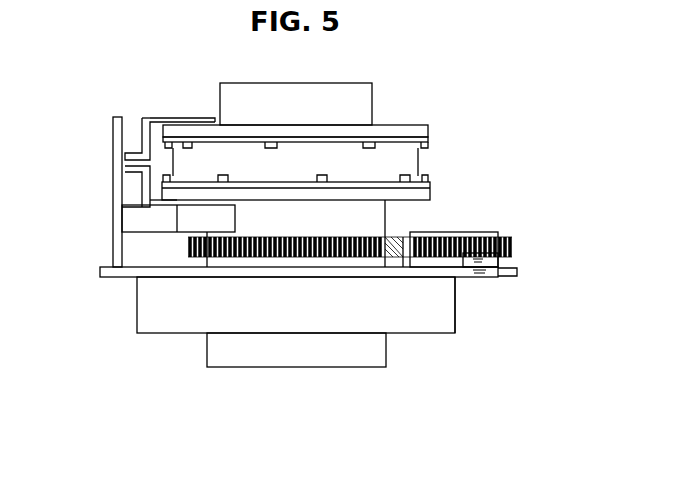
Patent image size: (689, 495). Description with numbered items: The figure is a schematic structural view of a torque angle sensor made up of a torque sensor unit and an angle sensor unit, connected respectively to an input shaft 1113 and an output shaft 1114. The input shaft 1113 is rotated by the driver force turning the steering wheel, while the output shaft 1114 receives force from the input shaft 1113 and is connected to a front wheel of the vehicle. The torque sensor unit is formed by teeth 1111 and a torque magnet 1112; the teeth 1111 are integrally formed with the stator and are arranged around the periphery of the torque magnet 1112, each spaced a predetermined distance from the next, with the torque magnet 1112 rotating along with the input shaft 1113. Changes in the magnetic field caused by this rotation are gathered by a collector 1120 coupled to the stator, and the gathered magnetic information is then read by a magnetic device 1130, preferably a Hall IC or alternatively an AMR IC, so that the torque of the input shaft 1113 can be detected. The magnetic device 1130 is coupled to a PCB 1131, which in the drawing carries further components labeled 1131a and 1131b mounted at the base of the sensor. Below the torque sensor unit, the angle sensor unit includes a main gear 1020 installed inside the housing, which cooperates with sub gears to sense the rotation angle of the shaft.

The main gear 1020 is at (300, 257).
The teeth 1111 is at (430, 130).
The torque magnet 1112 is at (413, 163).
The input shaft 1113 is at (362, 93).
The output shaft 1114 is at (375, 353).
The collector 1120 is at (184, 118).
The magnetic device 1130 is at (135, 157).
The PCB 1131 is at (114, 188).
The terminal portion 1131a is at (498, 262).
The base extension 1131b is at (490, 275).